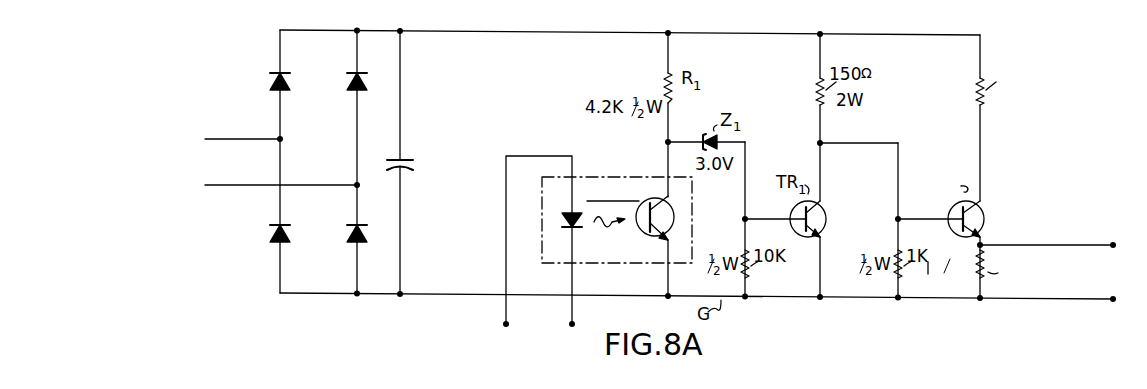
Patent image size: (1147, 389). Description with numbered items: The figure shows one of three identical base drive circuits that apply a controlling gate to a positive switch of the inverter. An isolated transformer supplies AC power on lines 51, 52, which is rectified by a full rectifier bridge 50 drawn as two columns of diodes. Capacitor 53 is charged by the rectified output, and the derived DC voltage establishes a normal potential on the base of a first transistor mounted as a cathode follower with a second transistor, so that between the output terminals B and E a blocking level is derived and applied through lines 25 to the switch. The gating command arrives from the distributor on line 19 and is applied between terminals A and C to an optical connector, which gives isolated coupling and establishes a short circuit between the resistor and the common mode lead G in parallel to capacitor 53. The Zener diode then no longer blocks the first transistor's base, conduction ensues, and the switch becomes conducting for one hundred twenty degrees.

The full rectifier bridge 50 is at (327, 164).
The line 51 is at (216, 133).
The line 52 is at (219, 187).
The capacitor 53 is at (383, 165).
The line 19 is at (551, 335).
The lines 25 is at (1092, 282).